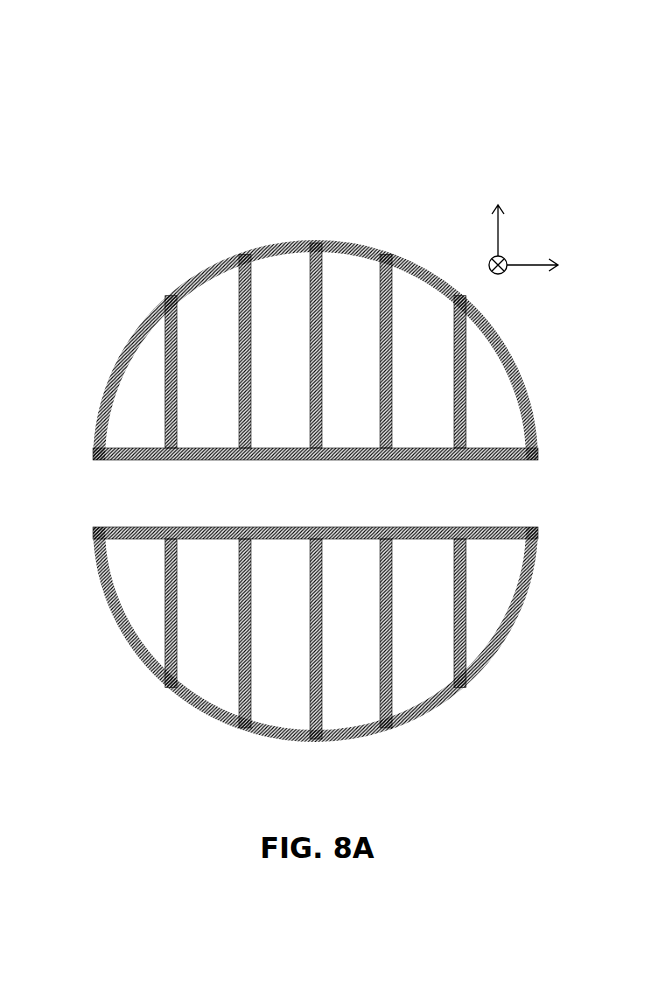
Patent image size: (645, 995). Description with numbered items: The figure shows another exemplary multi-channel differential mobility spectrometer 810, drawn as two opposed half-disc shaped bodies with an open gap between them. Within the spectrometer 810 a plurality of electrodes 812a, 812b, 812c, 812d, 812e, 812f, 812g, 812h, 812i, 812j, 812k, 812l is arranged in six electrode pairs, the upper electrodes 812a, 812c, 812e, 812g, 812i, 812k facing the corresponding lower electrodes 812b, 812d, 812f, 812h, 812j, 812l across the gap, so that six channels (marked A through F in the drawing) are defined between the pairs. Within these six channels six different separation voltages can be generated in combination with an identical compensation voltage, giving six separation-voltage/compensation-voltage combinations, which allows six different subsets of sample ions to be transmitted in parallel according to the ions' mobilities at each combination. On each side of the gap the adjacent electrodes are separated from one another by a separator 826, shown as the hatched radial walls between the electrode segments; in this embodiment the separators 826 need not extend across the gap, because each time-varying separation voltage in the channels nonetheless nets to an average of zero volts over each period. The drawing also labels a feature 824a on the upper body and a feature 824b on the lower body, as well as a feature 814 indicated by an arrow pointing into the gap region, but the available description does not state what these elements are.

The multi-channel differential mobility spectrometer 810 is at (241, 121).
The electrode 812a is at (135, 370).
The electrode 812b is at (145, 633).
The electrode 812c is at (207, 282).
The electrode 812d is at (208, 695).
The electrode 812e is at (280, 264).
The electrode 812f is at (285, 718).
The electrode 812g is at (347, 264).
The electrode 812h is at (350, 718).
The electrode 812i is at (405, 290).
The electrode 812j is at (422, 692).
The electrode 812k is at (493, 355).
The electrode 812l is at (490, 630).
The upper base strip 824a is at (107, 458).
The lower base strip 824b is at (110, 527).
The separator 826 is at (247, 375).
The gap between halves 814 is at (538, 492).